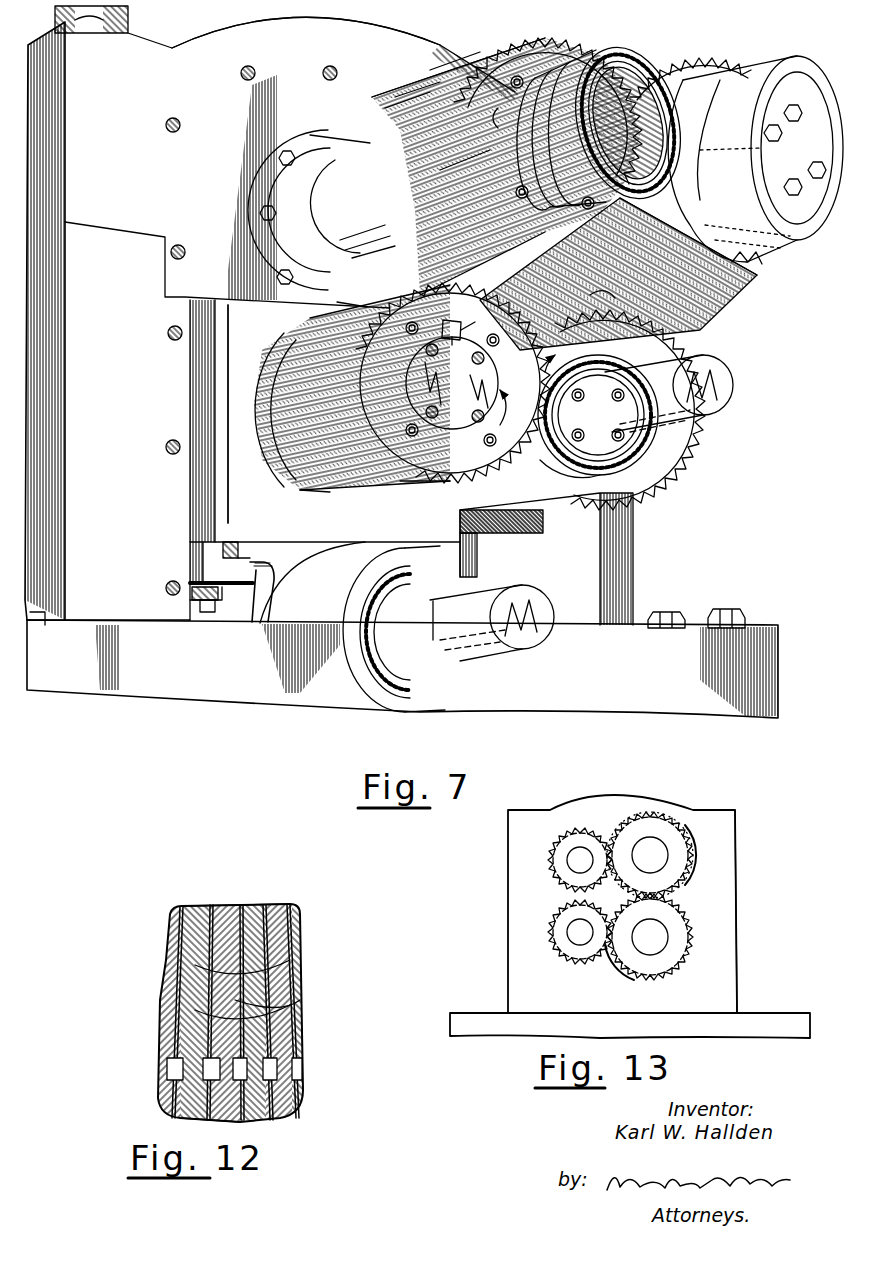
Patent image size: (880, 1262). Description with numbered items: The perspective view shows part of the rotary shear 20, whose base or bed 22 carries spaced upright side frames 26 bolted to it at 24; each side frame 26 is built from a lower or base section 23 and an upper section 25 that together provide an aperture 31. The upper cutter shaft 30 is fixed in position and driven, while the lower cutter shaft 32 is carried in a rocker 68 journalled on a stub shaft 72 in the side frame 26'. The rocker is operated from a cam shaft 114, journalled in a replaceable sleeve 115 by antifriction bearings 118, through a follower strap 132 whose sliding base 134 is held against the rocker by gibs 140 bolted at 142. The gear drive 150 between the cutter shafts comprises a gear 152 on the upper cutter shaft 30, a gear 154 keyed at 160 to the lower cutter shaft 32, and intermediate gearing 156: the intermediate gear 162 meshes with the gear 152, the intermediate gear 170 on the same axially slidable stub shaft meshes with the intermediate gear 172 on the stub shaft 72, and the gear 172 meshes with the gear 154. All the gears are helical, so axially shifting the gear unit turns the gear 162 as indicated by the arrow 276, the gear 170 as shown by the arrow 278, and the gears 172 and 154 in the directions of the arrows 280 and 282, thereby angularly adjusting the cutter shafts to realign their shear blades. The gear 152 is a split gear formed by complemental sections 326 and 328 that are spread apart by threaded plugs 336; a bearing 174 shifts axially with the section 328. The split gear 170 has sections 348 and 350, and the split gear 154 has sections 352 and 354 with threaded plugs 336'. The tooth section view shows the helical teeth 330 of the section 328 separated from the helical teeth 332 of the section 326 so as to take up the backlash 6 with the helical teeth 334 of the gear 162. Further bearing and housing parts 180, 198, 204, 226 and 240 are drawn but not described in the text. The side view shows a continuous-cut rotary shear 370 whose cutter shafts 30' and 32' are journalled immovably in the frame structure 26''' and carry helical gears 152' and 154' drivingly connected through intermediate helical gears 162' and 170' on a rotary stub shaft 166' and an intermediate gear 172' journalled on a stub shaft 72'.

In FIG. 7, the rotary shear 20 is at (85, 18).
In FIG. 7, the base or bed 22 is at (210, 695).
In FIG. 7, the lower or base section of side frame 23 is at (605, 568).
In FIG. 7, the bolts 24 is at (725, 609).
In FIG. 7, the upper section of side frame 25 is at (190, 46).
In FIG. 7, the side frame 26 is at (635, 559).
In FIG. 7, the side frame 26' is at (108, 626).
In FIG. 13, the frame structure 26''' is at (760, 908).
In FIG. 7, the upper cutter shaft 30 is at (321, 209).
In FIG. 13, the cutter shaft 30' is at (564, 846).
In FIG. 7, the aperture 31 is at (470, 535).
In FIG. 7, the lower cutter shaft 32 is at (452, 404).
In FIG. 13, the cutter shaft 32' is at (561, 916).
In FIG. 7, the rocker 68 is at (218, 512).
In FIG. 7, the stub shaft 72 is at (671, 389).
In FIG. 13, the stub shaft 72' is at (678, 934).
In FIG. 7, the cam shaft 114 is at (540, 603).
In FIG. 7, the replaceable sleeve or cartridge 115 is at (362, 660).
In FIG. 7, the antifriction bearings 118 is at (422, 682).
In FIG. 7, the follower strap 132 is at (266, 618).
In FIG. 7, the sliding base 134 is at (248, 572).
In FIG. 7, the gibs 140 is at (470, 510).
In FIG. 7, the bolts 142 is at (195, 598).
In FIG. 7, the gear drive 150 is at (483, 42).
In FIG. 7, the gear 152 is at (507, 148).
In FIG. 13, the helical gear 152' is at (588, 849).
In FIG. 7, the gear 154 is at (402, 416).
In FIG. 13, the helical gear 154' is at (580, 943).
In FIG. 7, the intermediate gearing 156 is at (642, 312).
In FIG. 7, the key 160 is at (442, 320).
In FIG. 7, the intermediate gear 162 is at (690, 58).
In FIG. 12, the intermediate gear 162 is at (234, 1001).
In FIG. 13, the intermediate helical gear 162' is at (670, 855).
In FIG. 13, the rotary stub shaft 166' is at (683, 851).
In FIG. 7, the intermediate gear 170 is at (618, 274).
In FIG. 13, the intermediate helical gear 170' is at (671, 859).
In FIG. 7, the intermediate gear 172 is at (636, 410).
In FIG. 13, the intermediate gear 172' is at (666, 944).
In FIG. 7, the bearing 174 is at (618, 70).
In FIG. 7, the spacer ring 180 is at (500, 108).
In FIG. 7, the bolts 198 is at (806, 152).
In FIG. 7, the bearing housing 204 is at (748, 80).
In FIG. 7, the bearing cap 226 is at (648, 487).
In FIG. 7, the bearing 240 is at (636, 437).
In FIG. 7, the arrow 276 is at (708, 258).
In FIG. 7, the arrow 278 is at (484, 321).
In FIG. 7, the arrow 280 is at (546, 368).
In FIG. 7, the arrow 282 is at (515, 413).
In FIG. 7, the gear section 326 is at (440, 62).
In FIG. 12, the gear section 326 is at (258, 902).
In FIG. 7, the gear section 328 is at (488, 48).
In FIG. 12, the gear section 328 is at (273, 1120).
In FIG. 7, the helical teeth 330 is at (476, 156).
In FIG. 12, the helical teeth 330 is at (250, 1122).
In FIG. 7, the helical teeth 332 is at (400, 100).
In FIG. 12, the helical teeth 332 is at (223, 906).
In FIG. 7, the helical teeth 334 is at (745, 280).
In FIG. 12, the helical teeth 334 is at (288, 950).
In FIG. 7, the threaded plugs 336 is at (561, 143).
In FIG. 7, the threaded plugs 336' is at (448, 396).
In FIG. 7, the gear section 348 is at (464, 319).
In FIG. 7, the gear section 350 is at (608, 300).
In FIG. 7, the gear section 352 is at (345, 495).
In FIG. 7, the gear section 354 is at (425, 492).
In FIG. 13, the rotary shear of continuous-cut type 370 is at (700, 803).
In FIG. 12, the teeth 6 is at (292, 1016).